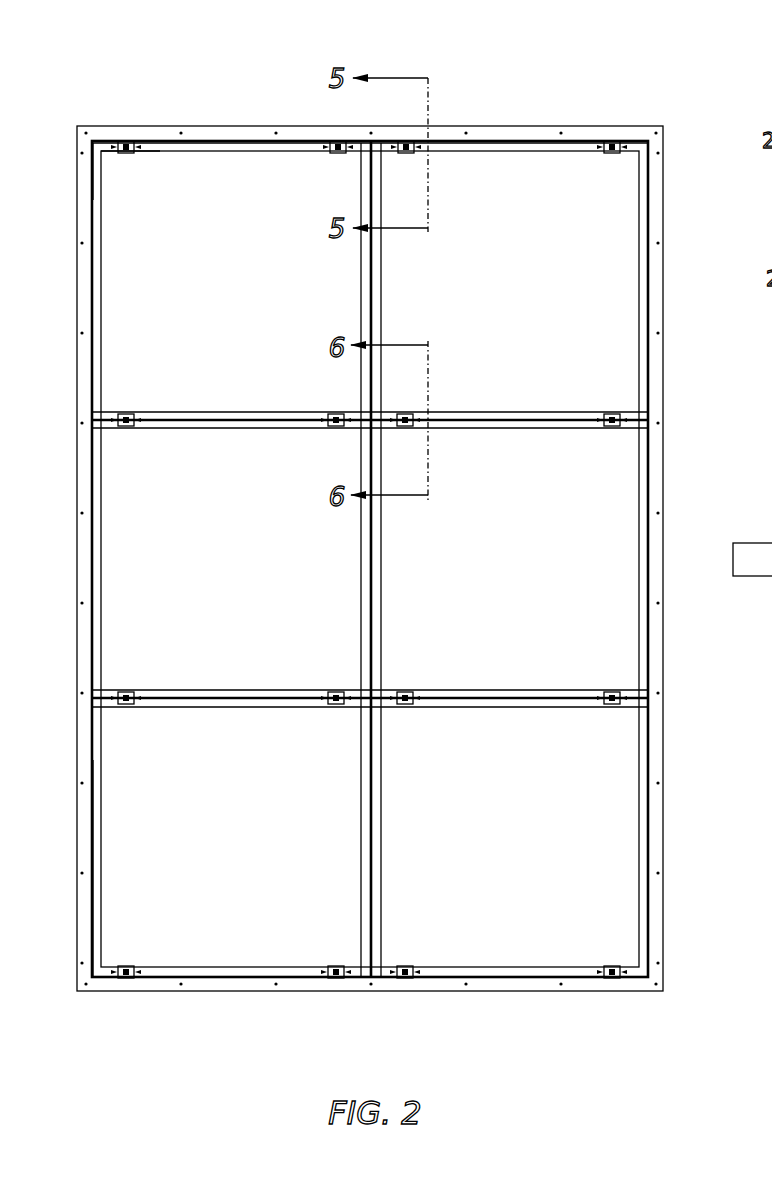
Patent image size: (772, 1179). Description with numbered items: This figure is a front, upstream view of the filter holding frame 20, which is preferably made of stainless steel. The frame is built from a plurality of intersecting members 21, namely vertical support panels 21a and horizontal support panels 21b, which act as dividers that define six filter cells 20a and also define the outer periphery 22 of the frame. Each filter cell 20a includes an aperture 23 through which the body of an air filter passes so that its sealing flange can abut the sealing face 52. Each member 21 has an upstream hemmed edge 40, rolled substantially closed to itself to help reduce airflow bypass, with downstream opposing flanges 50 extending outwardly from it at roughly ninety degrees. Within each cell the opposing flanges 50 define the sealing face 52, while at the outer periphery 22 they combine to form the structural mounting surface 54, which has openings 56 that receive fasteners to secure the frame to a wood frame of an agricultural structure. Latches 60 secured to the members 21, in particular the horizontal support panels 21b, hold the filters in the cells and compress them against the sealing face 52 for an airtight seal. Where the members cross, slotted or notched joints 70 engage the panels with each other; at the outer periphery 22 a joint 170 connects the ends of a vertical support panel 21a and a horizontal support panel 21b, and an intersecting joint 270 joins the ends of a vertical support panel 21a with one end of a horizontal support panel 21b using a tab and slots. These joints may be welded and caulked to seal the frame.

The filter holding frame 20 is at (383, 531).
The filter cell 20a is at (546, 184).
The intersecting member 21 is at (325, 559).
The vertical support panel 21a is at (95, 364).
The horizontal support panel 21b is at (205, 412).
The outer periphery 22 is at (682, 457).
The aperture 23 is at (104, 190).
The upstream hemmed edge 40 is at (85, 495).
The downstream opposing flanges 50 is at (97, 533).
The sealing face 52 is at (150, 412).
The mounting surface 54 is at (160, 133).
The openings 56 is at (80, 783).
The latch 60 is at (127, 682).
The joint 70 is at (340, 398).
The joint 170 is at (618, 166).
The intersecting joint 270 is at (336, 168).